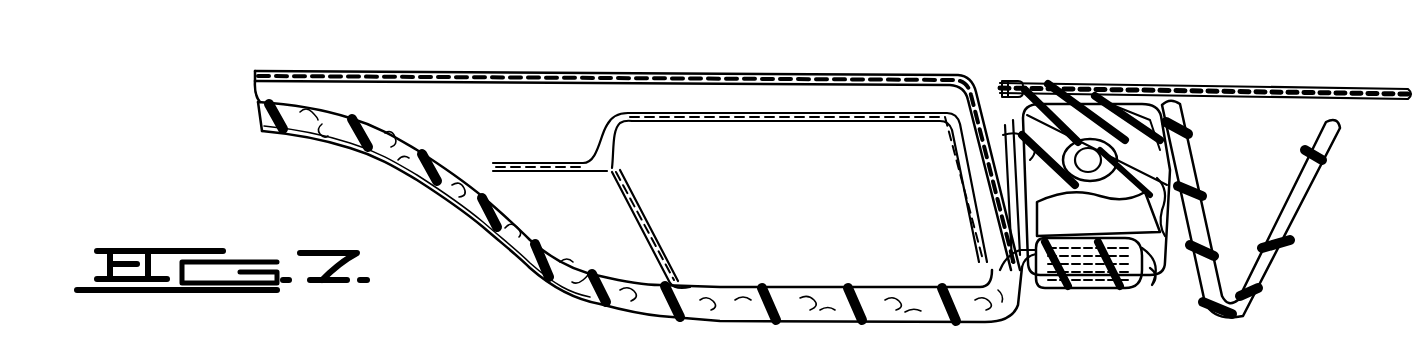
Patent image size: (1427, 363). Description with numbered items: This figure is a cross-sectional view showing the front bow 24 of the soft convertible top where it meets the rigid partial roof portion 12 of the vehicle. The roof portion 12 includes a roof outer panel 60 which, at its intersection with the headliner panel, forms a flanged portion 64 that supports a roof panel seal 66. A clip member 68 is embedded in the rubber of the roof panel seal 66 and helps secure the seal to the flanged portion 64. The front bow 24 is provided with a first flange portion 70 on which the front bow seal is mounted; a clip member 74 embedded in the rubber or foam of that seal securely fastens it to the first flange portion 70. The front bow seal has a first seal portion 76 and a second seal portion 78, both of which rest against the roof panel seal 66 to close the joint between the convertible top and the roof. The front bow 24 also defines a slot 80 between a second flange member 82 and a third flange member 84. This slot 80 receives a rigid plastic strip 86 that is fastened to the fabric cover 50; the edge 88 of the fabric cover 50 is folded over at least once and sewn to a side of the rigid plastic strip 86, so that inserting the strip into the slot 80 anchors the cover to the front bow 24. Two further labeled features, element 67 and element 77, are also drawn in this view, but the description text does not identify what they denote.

The rigid partial roof portion 12 is at (886, 67).
The roof outer panel 60 is at (764, 46).
The foam cushion beam 67 is at (800, 307).
The first seal portion 76 is at (970, 106).
The clip member 74 is at (1148, 84).
The edge of fabric cover 88 is at (1027, 82).
The rigid plastic strip 86 is at (1044, 92).
The slot 80 is at (1070, 97).
The third flange member 84 is at (1104, 102).
The front bow 24 is at (1172, 174).
The second flange member 82 is at (1076, 130).
The first flange portion 70 is at (1040, 180).
The second seal portion 78 is at (1032, 205).
The pivot pin 77 is at (1097, 203).
The flanged portion 64 is at (1060, 288).
The clip member 68 is at (1100, 288).
The roof panel seal 66 is at (1148, 273).
The fabric cover 50 is at (1352, 60).